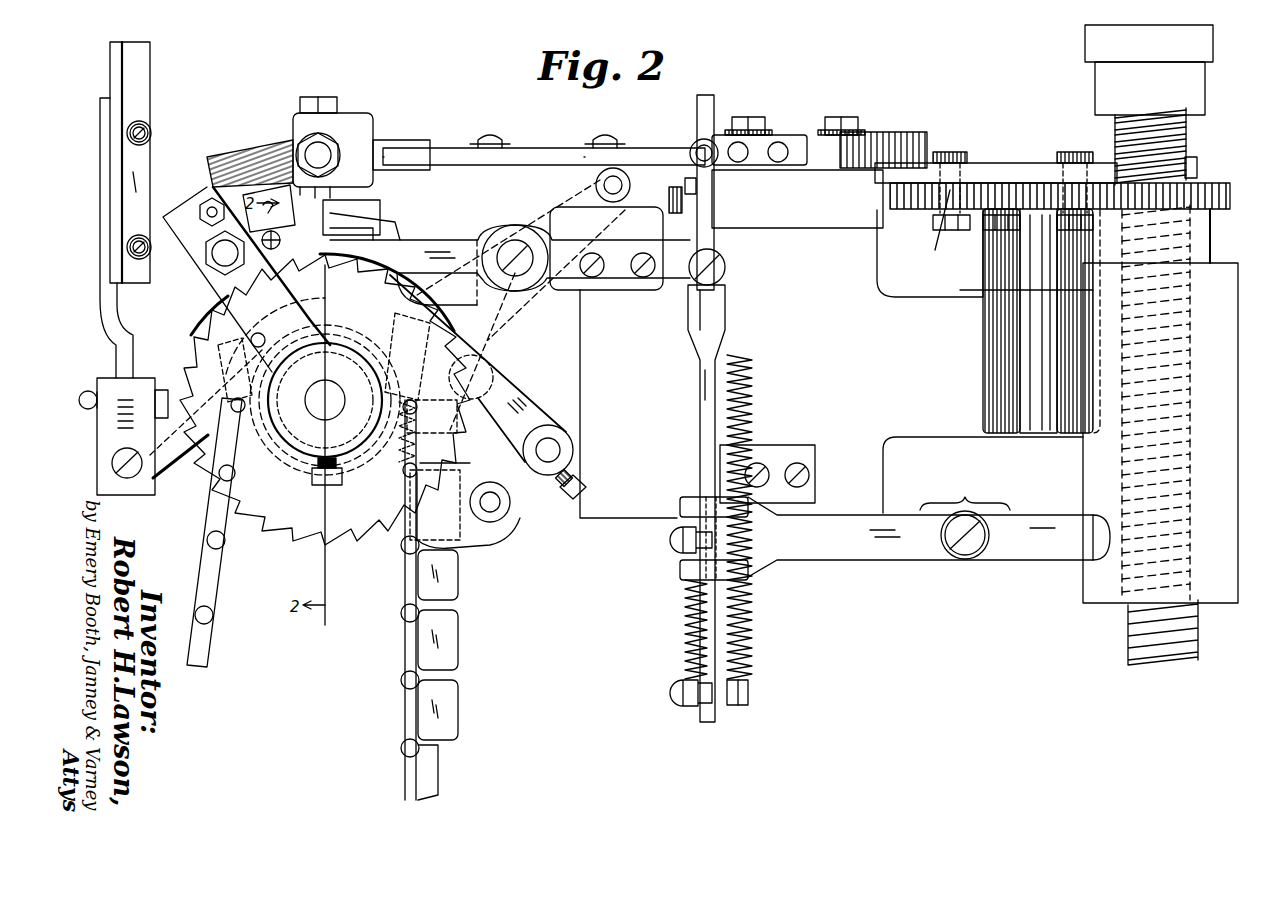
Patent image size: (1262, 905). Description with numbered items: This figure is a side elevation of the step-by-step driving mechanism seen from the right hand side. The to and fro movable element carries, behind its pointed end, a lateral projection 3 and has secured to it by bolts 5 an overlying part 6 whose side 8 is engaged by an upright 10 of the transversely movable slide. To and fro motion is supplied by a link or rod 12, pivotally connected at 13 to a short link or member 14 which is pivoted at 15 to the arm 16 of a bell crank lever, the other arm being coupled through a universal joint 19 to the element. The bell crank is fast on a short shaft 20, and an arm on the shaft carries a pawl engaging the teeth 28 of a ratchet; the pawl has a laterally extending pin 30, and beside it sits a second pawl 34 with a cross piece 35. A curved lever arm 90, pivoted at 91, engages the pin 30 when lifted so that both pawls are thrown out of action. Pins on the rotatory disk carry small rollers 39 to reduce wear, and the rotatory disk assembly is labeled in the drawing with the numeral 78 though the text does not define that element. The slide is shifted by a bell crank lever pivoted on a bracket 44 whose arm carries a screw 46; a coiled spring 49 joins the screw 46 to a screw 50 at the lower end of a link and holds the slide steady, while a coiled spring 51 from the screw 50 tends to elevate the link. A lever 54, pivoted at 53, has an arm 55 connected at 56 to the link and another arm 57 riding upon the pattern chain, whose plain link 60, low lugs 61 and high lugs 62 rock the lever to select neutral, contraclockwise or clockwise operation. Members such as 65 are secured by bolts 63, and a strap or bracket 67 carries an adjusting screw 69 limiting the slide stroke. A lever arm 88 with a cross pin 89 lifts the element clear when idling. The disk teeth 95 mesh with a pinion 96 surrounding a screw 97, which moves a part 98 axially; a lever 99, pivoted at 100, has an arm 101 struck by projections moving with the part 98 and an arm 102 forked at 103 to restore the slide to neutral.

The link or rod 12 is at (122, 82).
The pivotal connection 13 is at (88, 392).
The short link or member 14 is at (97, 432).
The pivot 15 is at (112, 463).
The arm 16 is at (188, 460).
The universal joint 19 is at (300, 140).
The short shaft 20 is at (325, 380).
The teeth 28 is at (308, 525).
The laterally extending pin 30 is at (378, 552).
The second pawl 34 is at (350, 225).
The cross piece 35 is at (350, 200).
The small roller 39 is at (955, 160).
The lateral projection 3 is at (522, 148).
The bolts 5 is at (490, 134).
The overlying part 6 is at (560, 148).
The side 8 is at (690, 153).
The upright 10 is at (714, 112).
The bracket 44 is at (782, 450).
The screw 46 is at (672, 540).
The coiled spring 49 is at (687, 620).
The screw 50 is at (672, 692).
The coiled spring 51 is at (752, 634).
The pivot 53 is at (516, 240).
The lever 54 is at (495, 226).
The arm 55 is at (620, 256).
The pivotal connection 56 is at (725, 270).
The arm 57 is at (428, 242).
The plain link 60 is at (218, 586).
The low lug 61 is at (195, 355).
The high lug 62 is at (458, 577).
The bolts 63 is at (752, 120).
The member 65 is at (888, 140).
The strap or bracket 67 is at (786, 140).
The adjusting screw 69 is at (695, 145).
The rack bar 78 is at (1030, 170).
The lever arm 88 is at (465, 430).
The cross pin 89 is at (596, 185).
The curved lever arm 90 is at (208, 300).
The pivot 91 is at (560, 450).
The teeth 95 is at (945, 192).
The pinion 96 is at (1205, 182).
The screw 97 is at (1180, 132).
The part 98 is at (1097, 40).
The lever 99 is at (965, 494).
The pivot 100 is at (968, 548).
The arm 101 is at (1078, 540).
The arm 102 is at (870, 548).
The fork 103 is at (680, 505).